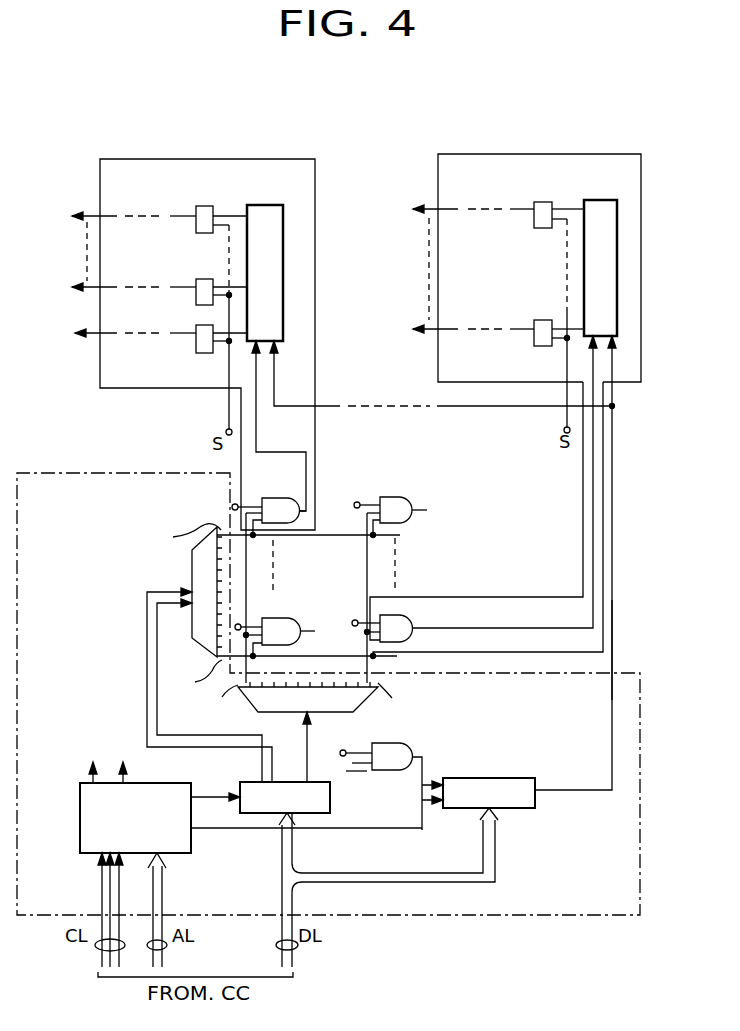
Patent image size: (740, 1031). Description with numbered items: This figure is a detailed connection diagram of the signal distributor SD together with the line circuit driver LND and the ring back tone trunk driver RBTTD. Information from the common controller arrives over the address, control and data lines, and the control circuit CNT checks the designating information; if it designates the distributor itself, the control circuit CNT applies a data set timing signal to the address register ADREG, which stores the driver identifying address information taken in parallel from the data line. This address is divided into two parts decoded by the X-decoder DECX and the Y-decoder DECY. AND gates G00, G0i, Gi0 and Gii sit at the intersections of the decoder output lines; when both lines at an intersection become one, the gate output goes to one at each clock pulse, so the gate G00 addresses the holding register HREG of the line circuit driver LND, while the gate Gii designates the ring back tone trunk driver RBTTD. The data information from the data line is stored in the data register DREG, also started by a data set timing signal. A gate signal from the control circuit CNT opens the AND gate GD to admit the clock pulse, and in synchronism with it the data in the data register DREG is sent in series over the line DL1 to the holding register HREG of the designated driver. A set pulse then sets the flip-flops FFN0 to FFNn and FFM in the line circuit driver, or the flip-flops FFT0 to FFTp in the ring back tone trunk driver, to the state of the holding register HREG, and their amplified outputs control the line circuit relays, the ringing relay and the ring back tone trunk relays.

The signal distributor SD is at (527, 953).
The line circuit driver LND is at (108, 410).
The ring back tone trunk driver RBTTD is at (550, 130).
The holding register HREG is at (442, 481).
The flip-flop FFN0 is at (217, 234).
The flip-flop FFNn is at (211, 280).
The flip-flop FFM is at (213, 351).
The flip-flop FFT0 is at (554, 244).
The flip-flop FFTp is at (548, 319).
The Y-decoder DECY is at (273, 653).
The X-decoder DECX is at (304, 647).
The AND gate G00 is at (254, 504).
The AND gate G0i is at (268, 627).
The AND gate Gi0 is at (380, 508).
The AND gate Gii is at (384, 620).
The AND gate GD is at (382, 776).
The data register DREG is at (413, 872).
The address register ADREG is at (306, 868).
The control circuit CNT is at (133, 852).
The line DL1 is at (614, 658).